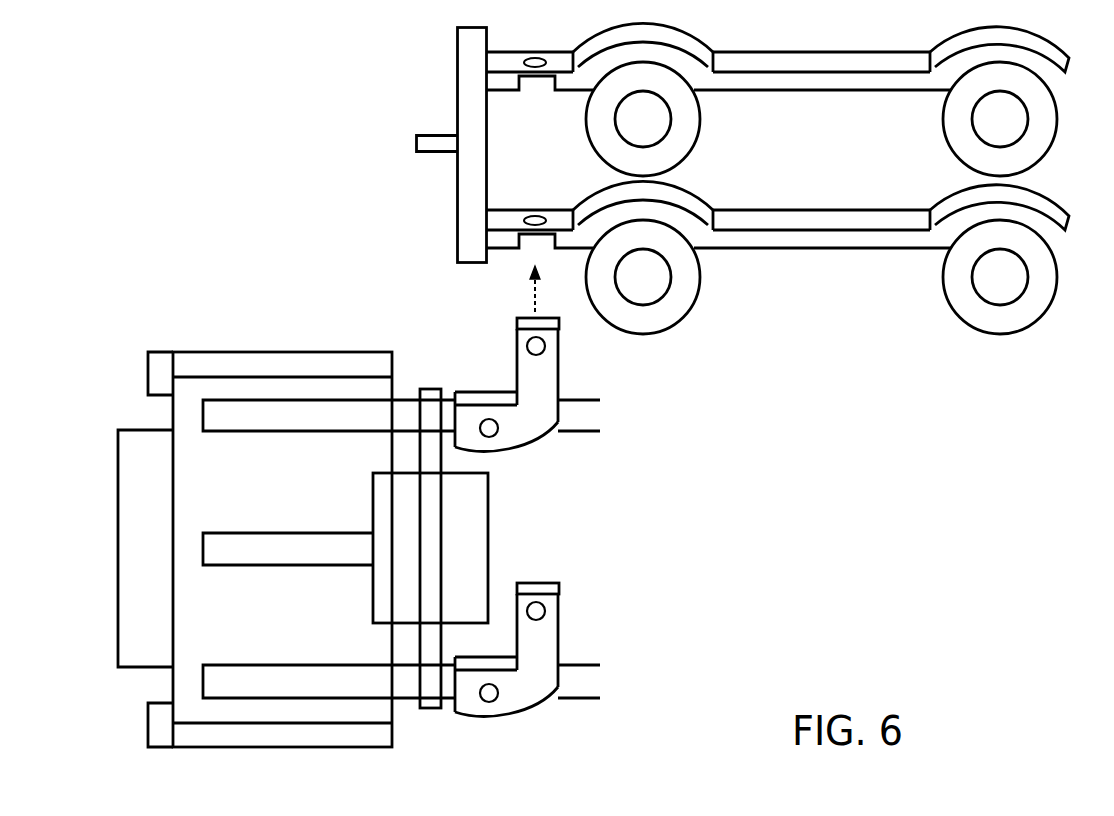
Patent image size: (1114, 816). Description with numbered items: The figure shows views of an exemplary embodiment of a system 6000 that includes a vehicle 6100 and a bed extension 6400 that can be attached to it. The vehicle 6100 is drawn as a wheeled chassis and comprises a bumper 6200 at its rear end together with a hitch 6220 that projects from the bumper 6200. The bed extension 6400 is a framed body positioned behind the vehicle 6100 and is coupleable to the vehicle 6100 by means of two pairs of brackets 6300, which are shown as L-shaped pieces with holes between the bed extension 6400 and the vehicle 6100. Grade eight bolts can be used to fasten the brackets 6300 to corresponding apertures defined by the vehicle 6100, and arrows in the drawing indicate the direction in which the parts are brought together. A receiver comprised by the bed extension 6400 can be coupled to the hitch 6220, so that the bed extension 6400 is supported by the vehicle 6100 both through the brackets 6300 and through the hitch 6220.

The system 6000 is at (203, 90).
The vehicle 6100 is at (865, 133).
The bumper 6200 is at (457, 72).
The hitch 6220 is at (434, 144).
The brackets 6300 is at (562, 374).
The bed extension 6400 is at (359, 549).